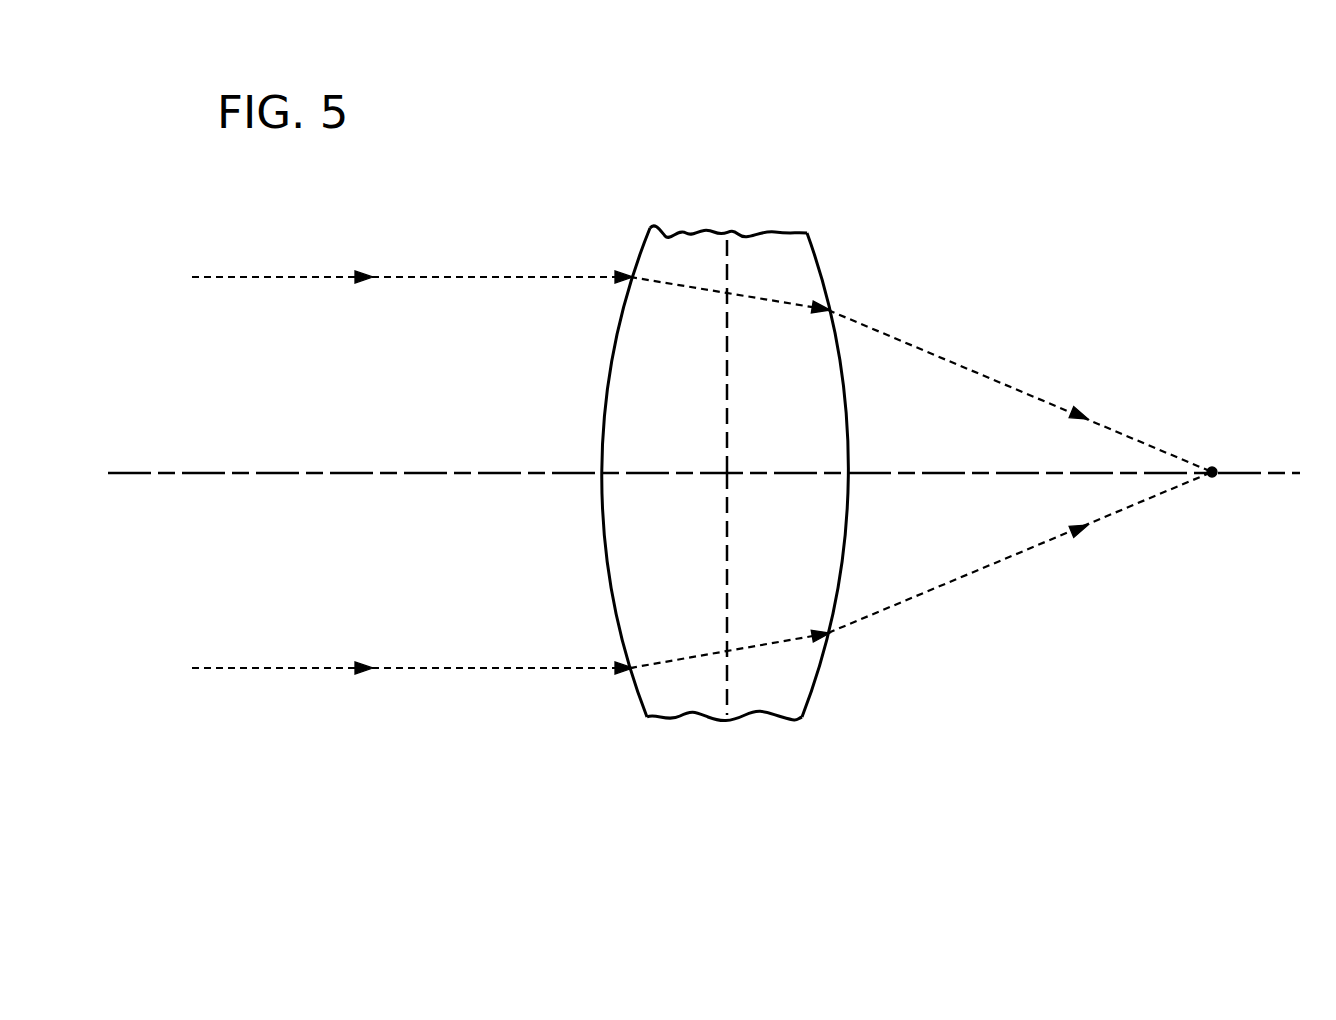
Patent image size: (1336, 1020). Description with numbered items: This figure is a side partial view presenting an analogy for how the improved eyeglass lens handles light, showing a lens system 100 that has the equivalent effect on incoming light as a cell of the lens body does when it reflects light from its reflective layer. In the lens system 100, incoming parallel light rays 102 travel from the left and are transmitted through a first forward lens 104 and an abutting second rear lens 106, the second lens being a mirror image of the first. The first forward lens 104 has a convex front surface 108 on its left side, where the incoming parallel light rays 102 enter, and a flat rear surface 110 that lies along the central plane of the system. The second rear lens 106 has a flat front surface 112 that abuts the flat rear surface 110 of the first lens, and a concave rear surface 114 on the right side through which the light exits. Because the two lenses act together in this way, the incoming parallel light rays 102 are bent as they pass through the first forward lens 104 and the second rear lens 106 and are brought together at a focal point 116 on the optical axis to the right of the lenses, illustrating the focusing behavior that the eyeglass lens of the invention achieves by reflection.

The lens system 100 is at (1023, 719).
The incoming parallel light rays 102 is at (457, 670).
The first forward lens 104 is at (697, 705).
The second rear lens 106 is at (800, 687).
The convex front surface 108 is at (603, 432).
The flat rear surface 110 is at (727, 379).
The flat front surface 112 is at (727, 562).
The concave rear surface 114 is at (850, 540).
The focal point 116 is at (1212, 478).